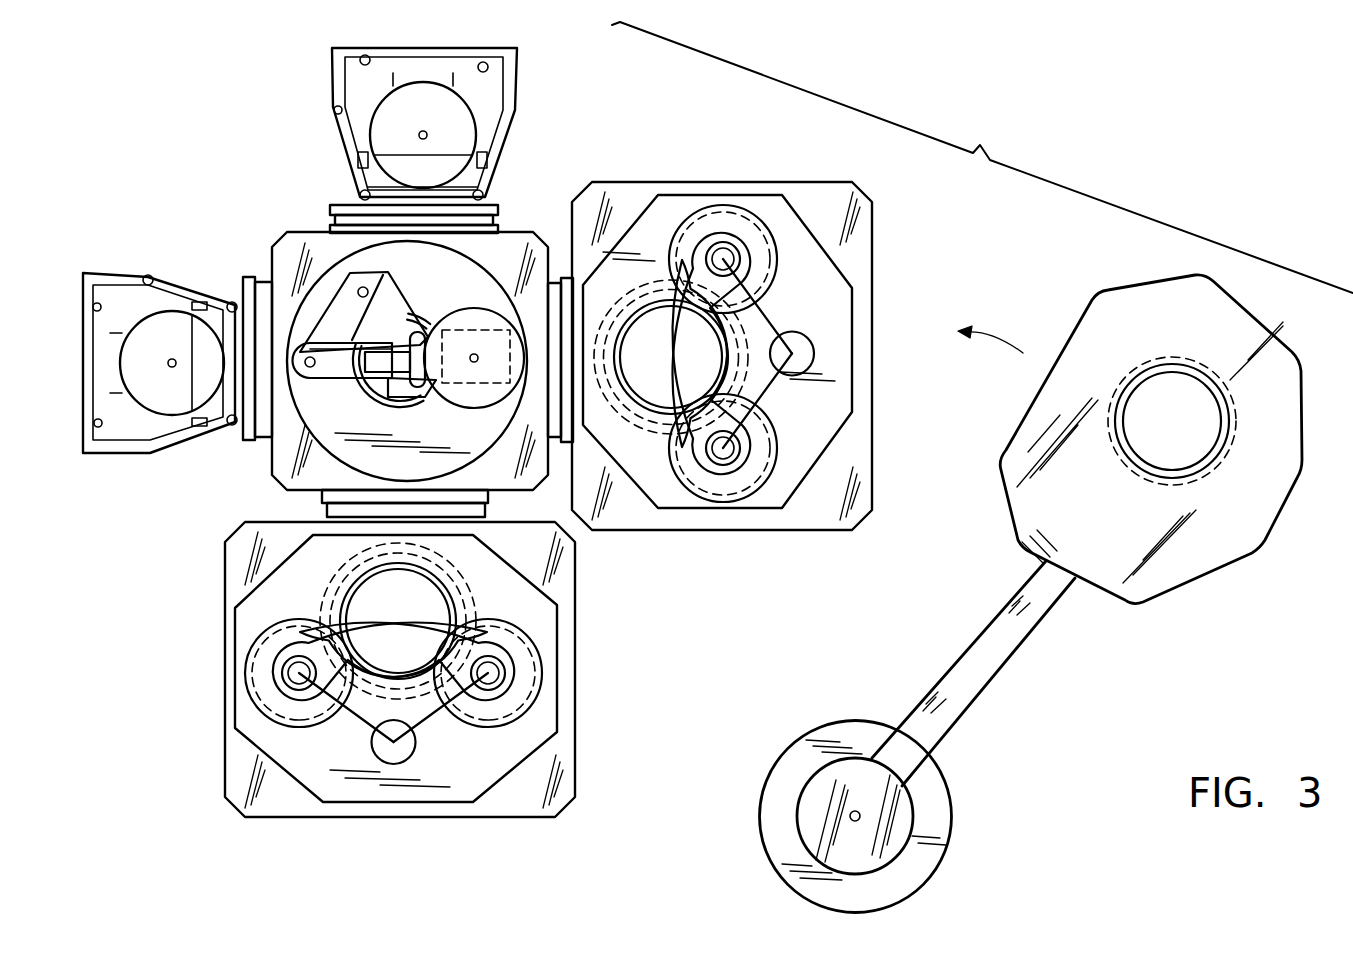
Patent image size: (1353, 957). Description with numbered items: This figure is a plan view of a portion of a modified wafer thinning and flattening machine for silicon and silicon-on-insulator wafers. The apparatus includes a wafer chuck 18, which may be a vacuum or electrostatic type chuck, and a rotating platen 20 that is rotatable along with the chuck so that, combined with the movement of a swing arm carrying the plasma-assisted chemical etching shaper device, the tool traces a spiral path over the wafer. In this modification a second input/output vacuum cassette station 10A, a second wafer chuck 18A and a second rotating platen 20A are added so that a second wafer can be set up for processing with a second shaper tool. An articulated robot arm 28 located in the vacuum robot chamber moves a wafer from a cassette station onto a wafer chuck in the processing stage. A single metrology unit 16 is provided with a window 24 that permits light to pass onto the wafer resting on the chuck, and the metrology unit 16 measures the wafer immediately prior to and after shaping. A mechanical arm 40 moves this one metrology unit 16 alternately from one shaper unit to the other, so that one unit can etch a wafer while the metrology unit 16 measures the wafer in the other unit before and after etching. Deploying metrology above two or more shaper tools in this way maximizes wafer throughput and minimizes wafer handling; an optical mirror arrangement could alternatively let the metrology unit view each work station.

The second I/O vacuum cassette station 10A is at (512, 137).
The articulated robot arm 28 is at (458, 276).
The rotating platen 20 is at (625, 388).
The wafer chuck 18 is at (653, 402).
The second wafer chuck 18A is at (447, 593).
The second rotating platen 20A is at (316, 600).
The metrology unit 16 is at (1306, 516).
The window 24 is at (1203, 492).
The mechanical arm 40 is at (1028, 670).